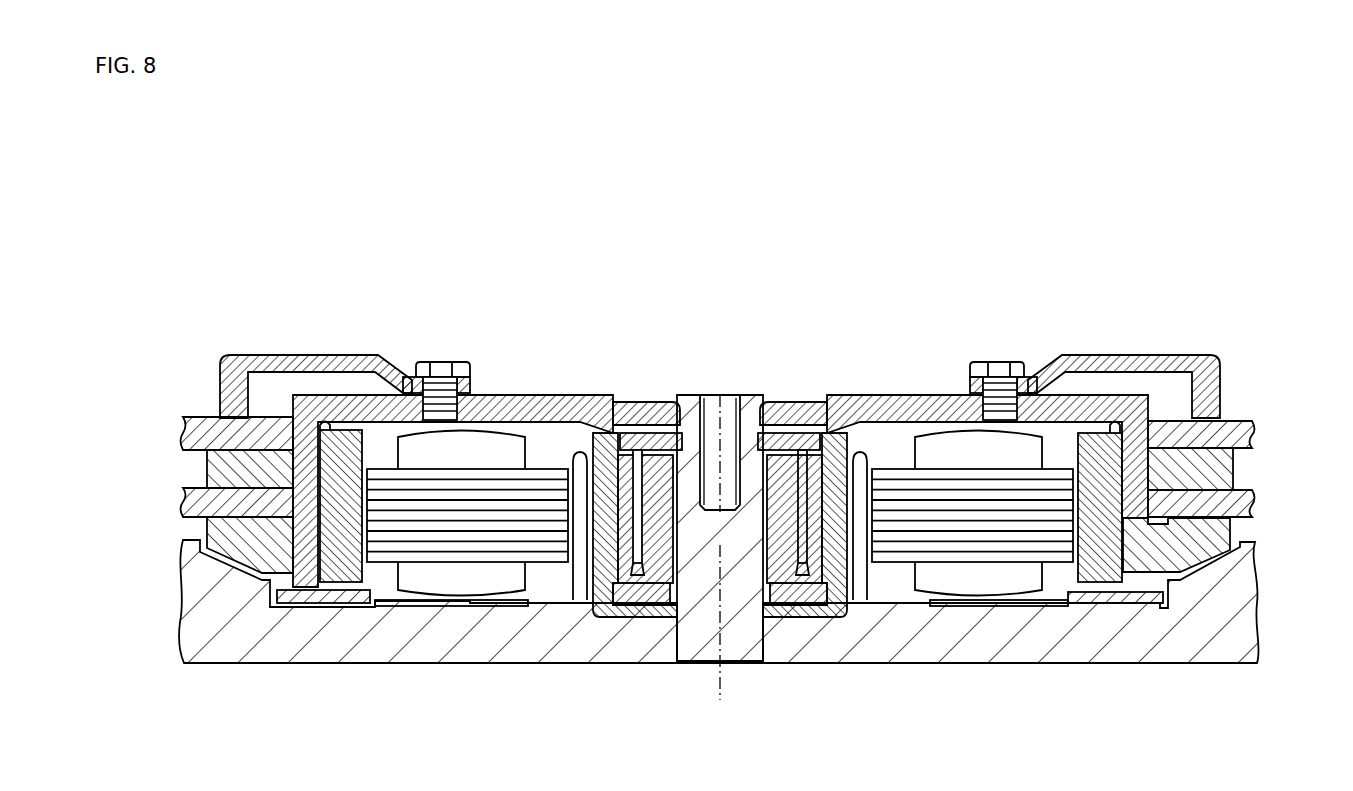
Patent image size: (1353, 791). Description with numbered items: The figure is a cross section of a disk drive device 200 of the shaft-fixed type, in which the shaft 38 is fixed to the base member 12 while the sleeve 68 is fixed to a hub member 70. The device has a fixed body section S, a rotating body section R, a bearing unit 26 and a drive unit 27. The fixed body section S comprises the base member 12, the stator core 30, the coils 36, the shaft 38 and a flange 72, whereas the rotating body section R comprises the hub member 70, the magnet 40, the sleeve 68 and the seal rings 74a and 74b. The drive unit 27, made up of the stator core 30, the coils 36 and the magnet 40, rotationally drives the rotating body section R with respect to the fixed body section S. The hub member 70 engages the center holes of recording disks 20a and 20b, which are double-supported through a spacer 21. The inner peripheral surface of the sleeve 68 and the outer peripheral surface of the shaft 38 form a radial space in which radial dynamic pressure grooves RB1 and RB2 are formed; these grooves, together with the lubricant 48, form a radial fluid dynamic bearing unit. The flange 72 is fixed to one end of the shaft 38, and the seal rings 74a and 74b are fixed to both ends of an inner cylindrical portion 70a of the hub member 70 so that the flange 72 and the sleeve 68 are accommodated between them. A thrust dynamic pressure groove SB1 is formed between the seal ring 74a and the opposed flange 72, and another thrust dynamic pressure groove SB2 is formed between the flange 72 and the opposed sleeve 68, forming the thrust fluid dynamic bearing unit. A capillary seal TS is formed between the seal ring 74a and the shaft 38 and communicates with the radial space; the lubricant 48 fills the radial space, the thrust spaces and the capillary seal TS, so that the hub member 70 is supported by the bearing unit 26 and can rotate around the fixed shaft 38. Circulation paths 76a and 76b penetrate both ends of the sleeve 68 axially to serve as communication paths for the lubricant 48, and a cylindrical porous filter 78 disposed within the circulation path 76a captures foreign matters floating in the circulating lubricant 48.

The base member 12 is at (1205, 652).
The recording disk 20a is at (1245, 412).
The recording disk 20b is at (1240, 503).
The spacer 21 is at (1240, 472).
The bearing unit 26 is at (721, 490).
The drive unit 27 is at (452, 452).
The stator core 30 is at (1020, 480).
The coils 36 is at (963, 440).
The shaft 38 is at (745, 400).
The magnet 40 is at (1100, 573).
The lubricant 48 is at (765, 400).
The sleeve 68 is at (812, 400).
The hub member 70 is at (920, 400).
The inner cylindrical portion 70a is at (578, 562).
The flange 72 is at (786, 400).
The seal ring 74a is at (622, 428).
The seal ring 74b is at (805, 607).
The circulation path 76a is at (612, 590).
The circulation path 76b is at (856, 600).
The porous filter 78 is at (630, 607).
The disk drive device 200 is at (868, 226).
The rotating body section R is at (870, 390).
The fixed body section S is at (934, 648).
The radial dynamic pressure groove RB1 is at (655, 400).
The radial dynamic pressure groove RB2 is at (650, 607).
The thrust dynamic pressure groove SB1 is at (648, 400).
The thrust dynamic pressure groove SB2 is at (595, 400).
The capillary seal TS is at (672, 400).